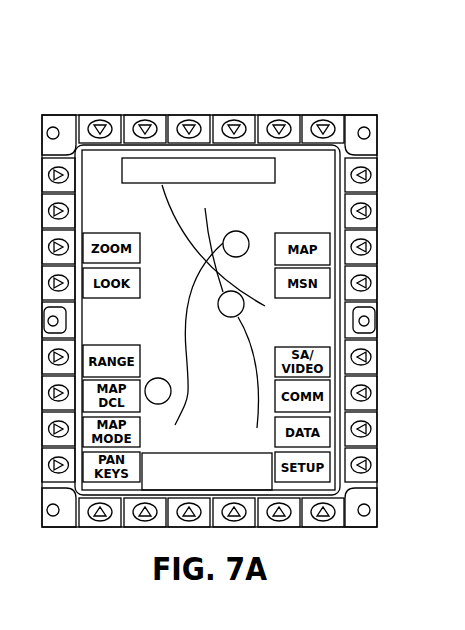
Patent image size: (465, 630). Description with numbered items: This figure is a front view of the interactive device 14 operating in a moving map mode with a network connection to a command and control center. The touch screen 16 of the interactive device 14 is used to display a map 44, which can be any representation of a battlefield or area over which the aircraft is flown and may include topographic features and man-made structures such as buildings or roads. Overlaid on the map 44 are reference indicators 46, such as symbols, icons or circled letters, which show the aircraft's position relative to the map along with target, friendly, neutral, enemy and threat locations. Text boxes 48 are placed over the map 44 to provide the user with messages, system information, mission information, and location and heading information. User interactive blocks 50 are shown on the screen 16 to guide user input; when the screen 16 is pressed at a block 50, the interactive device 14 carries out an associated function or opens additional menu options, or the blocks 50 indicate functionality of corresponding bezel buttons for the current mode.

The interactive device 14 is at (253, 97).
The touch screen 16 is at (302, 168).
The map 44 is at (182, 280).
The reference indicators 46 is at (238, 293).
The text box 48 is at (136, 172).
The user interactive blocks 50 is at (337, 266).